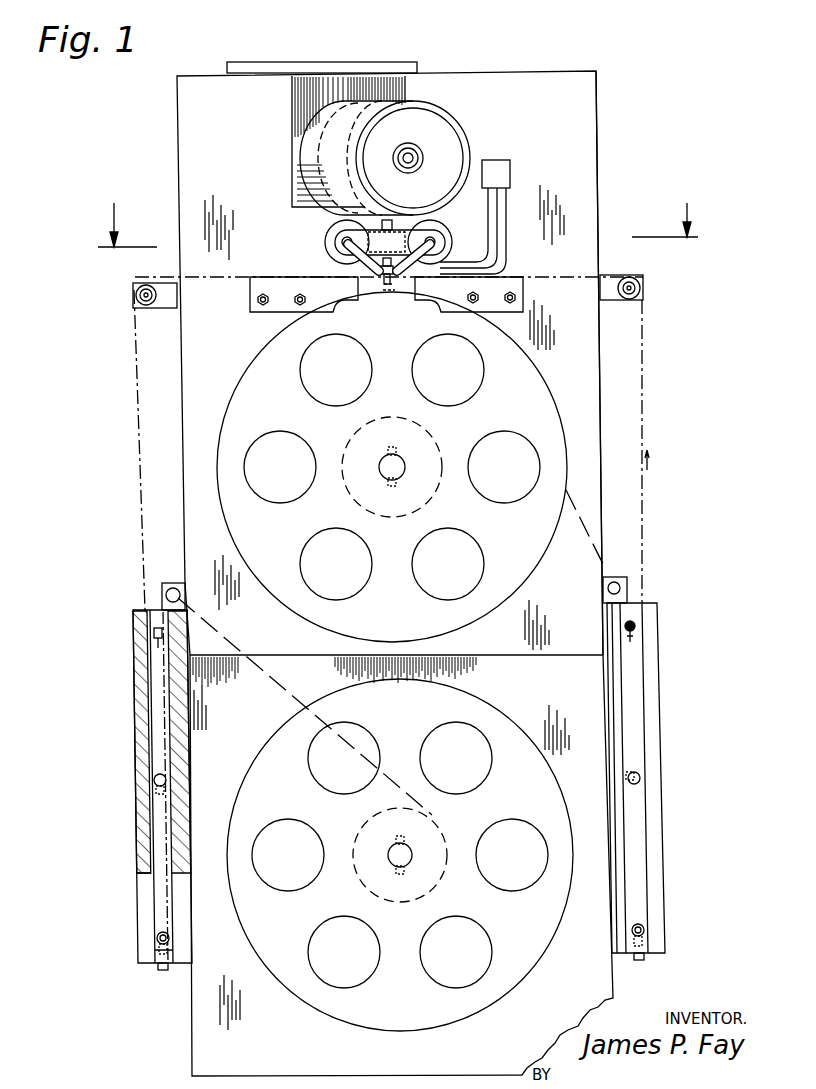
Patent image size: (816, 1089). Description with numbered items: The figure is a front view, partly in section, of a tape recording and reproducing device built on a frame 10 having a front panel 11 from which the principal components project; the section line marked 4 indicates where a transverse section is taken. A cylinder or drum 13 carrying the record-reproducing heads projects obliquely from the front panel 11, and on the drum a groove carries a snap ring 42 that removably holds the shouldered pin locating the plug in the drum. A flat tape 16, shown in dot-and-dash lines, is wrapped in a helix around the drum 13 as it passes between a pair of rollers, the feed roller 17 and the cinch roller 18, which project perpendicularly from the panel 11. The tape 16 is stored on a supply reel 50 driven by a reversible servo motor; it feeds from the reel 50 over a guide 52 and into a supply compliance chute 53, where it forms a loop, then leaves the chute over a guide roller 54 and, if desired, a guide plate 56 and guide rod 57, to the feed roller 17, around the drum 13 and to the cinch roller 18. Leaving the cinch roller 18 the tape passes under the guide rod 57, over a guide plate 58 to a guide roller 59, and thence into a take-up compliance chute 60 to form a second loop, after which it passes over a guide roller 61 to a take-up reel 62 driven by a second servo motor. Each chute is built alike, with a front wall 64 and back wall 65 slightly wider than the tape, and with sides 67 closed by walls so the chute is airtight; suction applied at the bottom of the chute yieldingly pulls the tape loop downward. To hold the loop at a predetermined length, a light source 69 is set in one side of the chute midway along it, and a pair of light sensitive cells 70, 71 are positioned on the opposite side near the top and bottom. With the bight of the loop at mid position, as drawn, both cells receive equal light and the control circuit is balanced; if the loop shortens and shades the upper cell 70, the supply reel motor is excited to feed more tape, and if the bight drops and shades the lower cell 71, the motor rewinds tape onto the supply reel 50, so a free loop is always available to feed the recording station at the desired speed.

The section line 4- 4 is at (398, 213).
The frame 10 is at (600, 170).
The front panel 11 is at (588, 392).
The cylinder or drum 13 is at (455, 136).
The tape 16 is at (136, 430).
The feed roller 17 is at (324, 242).
The cinch roller 18 is at (442, 230).
The snap ring 42 is at (416, 160).
The supply reel 50 is at (246, 362).
The guide 52 is at (607, 590).
The supply compliance chute 53 is at (662, 720).
The guide roller 54 is at (627, 300).
The guide plate 56 is at (490, 290).
The guide rod 57 is at (386, 290).
The guide plate 58 is at (259, 289).
The guide roller 59 is at (148, 309).
The take-up compliance chute 60 is at (139, 805).
The guide roller 61 is at (174, 586).
The take-up reel 62 is at (316, 1016).
The front wall 64 is at (153, 786).
The back wall 65 is at (165, 786).
The sides of the chute 67 is at (162, 742).
The light source 69 is at (153, 778).
The upper light sensitive cell 70 is at (152, 636).
The lower light sensitive cell 71 is at (170, 972).